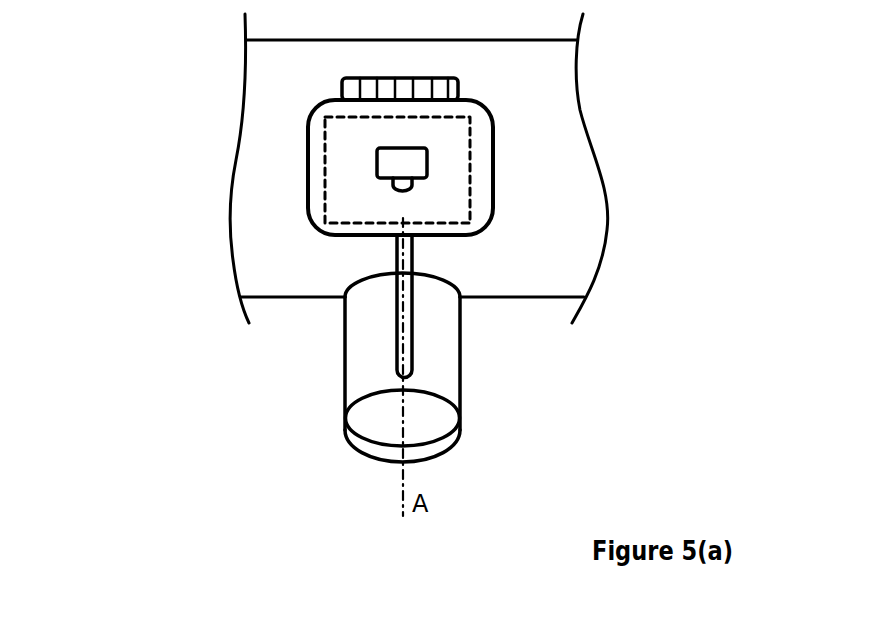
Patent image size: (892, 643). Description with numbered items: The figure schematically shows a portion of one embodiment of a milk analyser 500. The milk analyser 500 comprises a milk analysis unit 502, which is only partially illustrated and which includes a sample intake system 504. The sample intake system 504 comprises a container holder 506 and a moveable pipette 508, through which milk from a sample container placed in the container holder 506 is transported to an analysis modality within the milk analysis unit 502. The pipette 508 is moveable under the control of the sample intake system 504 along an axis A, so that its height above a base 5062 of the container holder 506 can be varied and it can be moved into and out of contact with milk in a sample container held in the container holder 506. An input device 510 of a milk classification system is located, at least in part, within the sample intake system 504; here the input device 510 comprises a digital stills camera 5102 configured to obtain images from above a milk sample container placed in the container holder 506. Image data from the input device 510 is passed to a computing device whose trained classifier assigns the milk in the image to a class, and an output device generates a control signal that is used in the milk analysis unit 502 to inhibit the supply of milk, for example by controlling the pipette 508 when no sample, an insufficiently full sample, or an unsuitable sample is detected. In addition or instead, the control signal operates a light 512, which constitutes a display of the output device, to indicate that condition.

The milk analyser 500 is at (158, 350).
The milk analysis unit 502 is at (265, 80).
The sample intake system 504 is at (492, 216).
The container holder 506 is at (460, 358).
The moveable pipette 508 is at (397, 343).
The input device 510 is at (325, 193).
The light 512 is at (462, 92).
The base 5062 is at (440, 418).
The digital stills camera 5102 is at (427, 160).